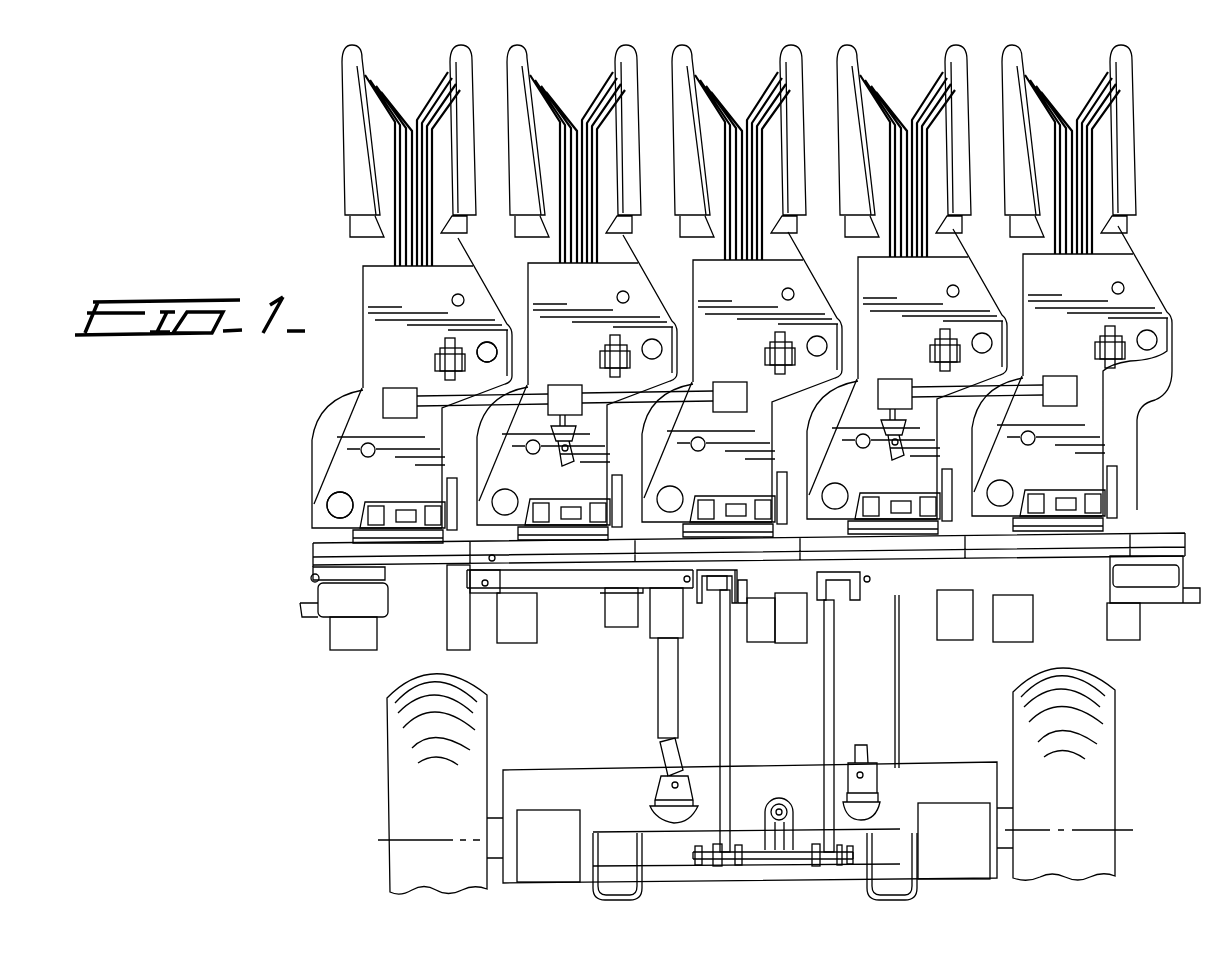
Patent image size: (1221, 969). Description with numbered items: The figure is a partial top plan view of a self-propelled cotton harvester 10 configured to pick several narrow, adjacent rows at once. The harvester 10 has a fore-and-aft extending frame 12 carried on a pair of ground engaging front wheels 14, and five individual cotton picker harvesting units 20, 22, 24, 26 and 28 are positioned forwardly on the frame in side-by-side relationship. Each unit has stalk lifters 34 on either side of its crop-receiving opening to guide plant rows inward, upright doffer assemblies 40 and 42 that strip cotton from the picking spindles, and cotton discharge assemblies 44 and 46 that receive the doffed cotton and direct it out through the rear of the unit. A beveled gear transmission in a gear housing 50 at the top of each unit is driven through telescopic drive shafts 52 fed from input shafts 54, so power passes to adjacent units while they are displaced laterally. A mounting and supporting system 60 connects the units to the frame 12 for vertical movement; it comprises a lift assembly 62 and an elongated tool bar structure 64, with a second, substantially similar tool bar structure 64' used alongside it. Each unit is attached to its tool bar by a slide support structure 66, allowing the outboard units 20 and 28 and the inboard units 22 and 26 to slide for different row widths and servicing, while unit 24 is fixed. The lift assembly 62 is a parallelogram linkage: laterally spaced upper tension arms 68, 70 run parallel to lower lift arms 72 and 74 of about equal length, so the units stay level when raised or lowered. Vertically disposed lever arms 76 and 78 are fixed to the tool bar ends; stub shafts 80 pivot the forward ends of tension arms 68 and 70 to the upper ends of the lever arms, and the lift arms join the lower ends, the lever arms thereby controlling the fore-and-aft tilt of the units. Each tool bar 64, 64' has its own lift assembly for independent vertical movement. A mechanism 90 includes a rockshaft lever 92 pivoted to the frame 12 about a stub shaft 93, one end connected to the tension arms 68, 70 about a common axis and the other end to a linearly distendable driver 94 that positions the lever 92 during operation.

The cotton harvester 10 is at (318, 712).
The frame 12 is at (530, 776).
The front wheels 14 is at (408, 785).
The harvesting unit 20 is at (407, 295).
The harvesting unit 22 is at (577, 306).
The harvesting unit 24 is at (742, 304).
The harvesting unit 26 is at (907, 303).
The harvesting unit 28 is at (1072, 301).
The stalk lifters 34 is at (445, 73).
The doffer assembly 40 is at (490, 343).
The doffer assembly 42 is at (328, 508).
The cotton discharge assembly 44 is at (455, 632).
The cotton discharge assembly 46 is at (352, 645).
The gear housing 50 is at (1074, 402).
The telescopic drive shaft 52 is at (578, 384).
The input shaft 54 is at (594, 460).
The mounting and supporting system 60 is at (591, 590).
The lift assembly 62 is at (815, 741).
The tool bar structure 64 is at (716, 575).
The second tool bar structure 64' is at (1155, 545).
The slide support structure 66 is at (410, 515).
The upper tension arm 68 is at (722, 688).
The upper tension arm 70 is at (824, 700).
The lower lift arm 72 is at (658, 686).
The lower lift arm 74 is at (897, 678).
The lever arm 76 is at (745, 604).
The lever arm 78 is at (808, 605).
The stub shaft 80 is at (712, 604).
The mechanism 90 is at (780, 790).
The rockshaft lever 92 is at (767, 845).
The stub shaft 93 is at (847, 863).
The linearly distendable driver 94 is at (812, 793).